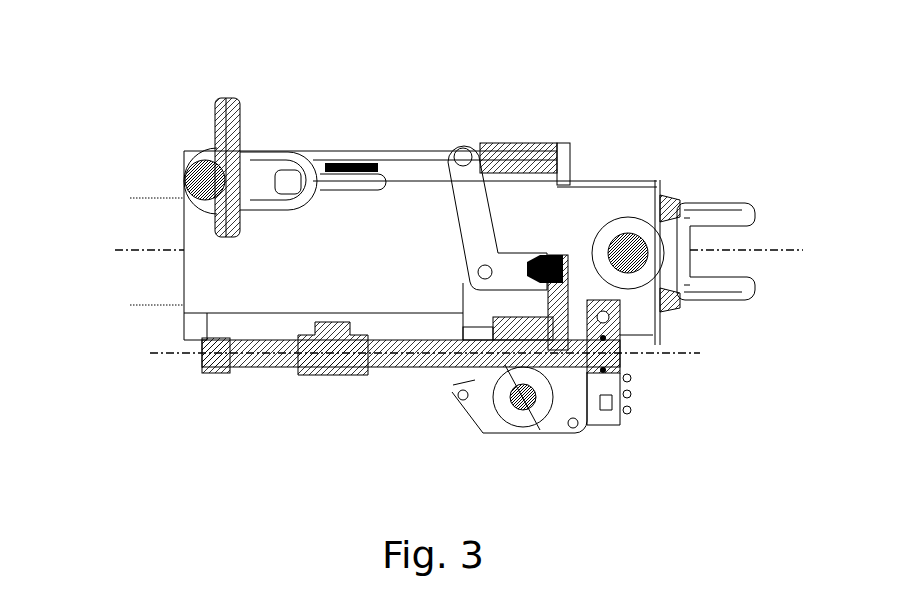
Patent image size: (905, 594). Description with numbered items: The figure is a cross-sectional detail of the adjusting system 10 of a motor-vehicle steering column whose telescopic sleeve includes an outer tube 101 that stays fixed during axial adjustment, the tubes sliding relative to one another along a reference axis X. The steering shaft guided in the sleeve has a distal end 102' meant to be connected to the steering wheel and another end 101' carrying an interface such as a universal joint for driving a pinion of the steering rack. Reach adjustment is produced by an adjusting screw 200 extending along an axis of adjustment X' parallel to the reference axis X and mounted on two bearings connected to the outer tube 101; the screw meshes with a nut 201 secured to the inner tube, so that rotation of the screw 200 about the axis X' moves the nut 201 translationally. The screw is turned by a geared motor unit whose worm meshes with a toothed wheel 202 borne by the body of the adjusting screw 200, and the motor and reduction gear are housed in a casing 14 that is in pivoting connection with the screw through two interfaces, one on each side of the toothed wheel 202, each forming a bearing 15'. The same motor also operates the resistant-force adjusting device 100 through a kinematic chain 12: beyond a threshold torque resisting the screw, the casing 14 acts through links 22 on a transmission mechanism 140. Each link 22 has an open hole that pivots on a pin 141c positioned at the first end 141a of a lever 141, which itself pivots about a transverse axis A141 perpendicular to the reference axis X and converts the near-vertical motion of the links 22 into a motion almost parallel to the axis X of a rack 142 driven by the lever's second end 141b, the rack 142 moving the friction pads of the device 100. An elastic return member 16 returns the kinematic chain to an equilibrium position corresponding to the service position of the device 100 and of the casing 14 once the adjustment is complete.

The adjusting system 10 is at (603, 122).
The kinematic chain 12 is at (412, 239).
The casing 14 is at (472, 417).
The bearing 15' is at (525, 428).
The elastic return member 16 is at (545, 143).
The link 22 is at (563, 292).
The resistant-force adjusting device 100 is at (354, 148).
The outer tube 101 is at (146, 298).
The end of the shaft 101' is at (732, 294).
The distal end of the shaft 102' is at (160, 167).
The transmission mechanism 140 is at (479, 89).
The lever 141 is at (476, 188).
The first end of the lever 141a is at (512, 272).
The second end of the lever 141b is at (455, 148).
The pin 141c is at (567, 282).
The rack 142 is at (325, 160).
The adjusting screw 200 is at (267, 358).
The nut 201 is at (330, 375).
The toothed wheel 202 is at (510, 383).
The transverse axis A141 is at (478, 278).
The reference axis X is at (464, 287).
The axis of adjustment X' is at (431, 388).